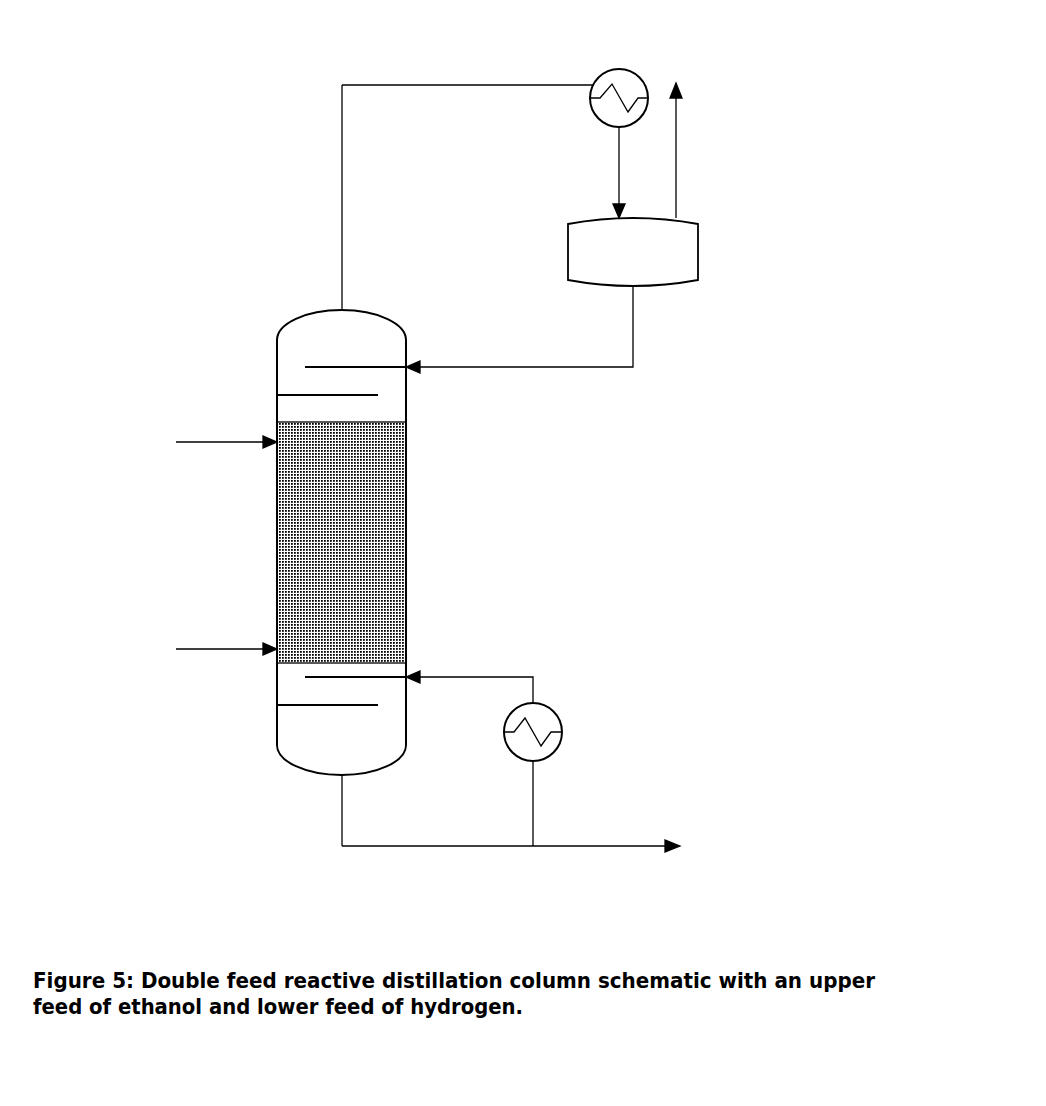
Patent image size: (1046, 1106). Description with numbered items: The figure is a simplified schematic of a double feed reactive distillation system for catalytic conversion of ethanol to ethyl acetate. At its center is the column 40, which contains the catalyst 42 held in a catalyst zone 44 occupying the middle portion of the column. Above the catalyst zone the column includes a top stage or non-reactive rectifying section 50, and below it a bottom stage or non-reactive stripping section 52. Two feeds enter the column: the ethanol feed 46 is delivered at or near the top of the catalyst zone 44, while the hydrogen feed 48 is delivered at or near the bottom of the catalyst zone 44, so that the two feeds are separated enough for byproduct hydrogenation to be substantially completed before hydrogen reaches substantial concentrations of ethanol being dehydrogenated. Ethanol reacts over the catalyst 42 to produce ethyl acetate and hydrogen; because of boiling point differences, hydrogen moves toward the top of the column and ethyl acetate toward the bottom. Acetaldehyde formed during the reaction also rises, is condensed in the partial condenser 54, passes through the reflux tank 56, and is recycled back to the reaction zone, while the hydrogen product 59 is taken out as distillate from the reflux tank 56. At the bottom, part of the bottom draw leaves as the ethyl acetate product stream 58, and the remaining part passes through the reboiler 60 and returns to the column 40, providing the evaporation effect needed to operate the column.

The column 40 is at (277, 535).
The catalyst 42 is at (341, 474).
The catalyst zone 44 is at (384, 562).
The ethanol feed 46 is at (161, 447).
The hydrogen feed 48 is at (154, 659).
The non-reactive rectifying section 50 is at (298, 341).
The non-reactive stripping section 52 is at (288, 704).
The partial condenser 54 is at (616, 70).
The reflux tank 56 is at (698, 252).
The ethyl acetate product stream 58 is at (617, 842).
The hydrogen product 59 is at (727, 118).
The reboiler 60 is at (562, 732).